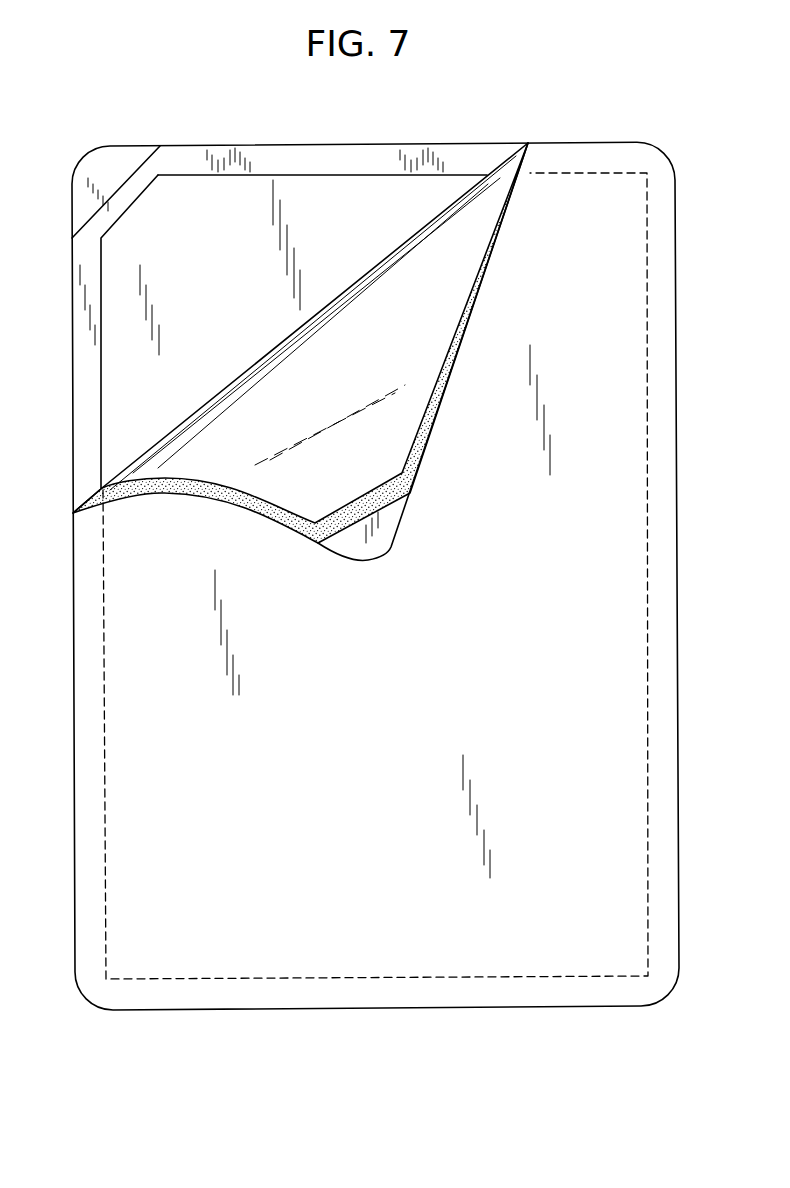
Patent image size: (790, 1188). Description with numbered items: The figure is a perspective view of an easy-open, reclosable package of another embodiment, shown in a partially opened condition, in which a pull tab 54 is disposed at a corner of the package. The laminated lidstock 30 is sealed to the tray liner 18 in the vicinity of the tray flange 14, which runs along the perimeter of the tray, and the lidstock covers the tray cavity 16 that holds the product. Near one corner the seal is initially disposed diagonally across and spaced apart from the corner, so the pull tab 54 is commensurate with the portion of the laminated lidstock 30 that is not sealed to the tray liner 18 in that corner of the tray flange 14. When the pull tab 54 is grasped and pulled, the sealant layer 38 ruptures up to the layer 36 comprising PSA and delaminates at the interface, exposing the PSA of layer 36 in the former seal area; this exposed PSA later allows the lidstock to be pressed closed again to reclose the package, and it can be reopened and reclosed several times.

The tray flange 14 is at (136, 134).
The tray cavity 16 is at (237, 289).
The tray liner 18 is at (95, 186).
The laminated lidstock 30 is at (403, 692).
The layer comprising PSA 36 is at (438, 399).
The sealant layer 38 is at (85, 375).
The pull tab 54 is at (383, 541).